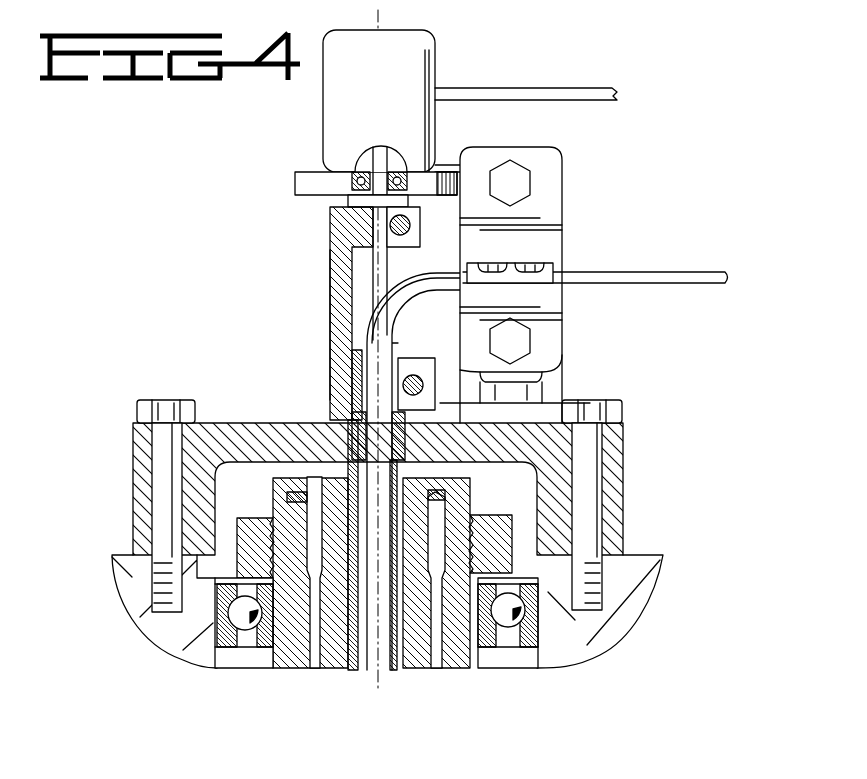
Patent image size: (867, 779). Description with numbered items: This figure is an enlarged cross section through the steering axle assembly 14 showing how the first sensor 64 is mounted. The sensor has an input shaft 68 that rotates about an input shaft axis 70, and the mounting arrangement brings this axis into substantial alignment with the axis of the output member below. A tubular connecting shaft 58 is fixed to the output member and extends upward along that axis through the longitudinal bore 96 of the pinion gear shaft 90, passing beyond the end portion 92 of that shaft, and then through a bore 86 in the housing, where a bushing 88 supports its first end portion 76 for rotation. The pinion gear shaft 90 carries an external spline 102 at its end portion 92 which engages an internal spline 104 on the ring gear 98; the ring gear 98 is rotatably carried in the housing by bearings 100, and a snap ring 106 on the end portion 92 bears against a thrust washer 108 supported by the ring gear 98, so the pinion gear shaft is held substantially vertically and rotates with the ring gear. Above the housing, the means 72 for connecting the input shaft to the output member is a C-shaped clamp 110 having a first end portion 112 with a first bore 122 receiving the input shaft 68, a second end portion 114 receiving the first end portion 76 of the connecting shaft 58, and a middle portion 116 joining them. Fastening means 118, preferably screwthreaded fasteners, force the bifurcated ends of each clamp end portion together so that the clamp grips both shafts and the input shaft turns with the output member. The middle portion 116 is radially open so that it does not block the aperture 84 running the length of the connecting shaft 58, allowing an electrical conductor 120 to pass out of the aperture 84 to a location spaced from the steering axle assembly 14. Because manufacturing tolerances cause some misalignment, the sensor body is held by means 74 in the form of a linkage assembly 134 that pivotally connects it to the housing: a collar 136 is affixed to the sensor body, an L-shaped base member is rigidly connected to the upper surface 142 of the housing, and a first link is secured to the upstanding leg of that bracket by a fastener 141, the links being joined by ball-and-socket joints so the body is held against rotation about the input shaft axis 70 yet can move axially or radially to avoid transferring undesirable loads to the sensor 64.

The steering axle assembly 14 is at (628, 212).
The connecting shaft 58 is at (355, 605).
The first sensor 64 is at (370, 84).
The input shaft 68 is at (378, 161).
The input shaft axis 70 is at (385, 62).
The means for connecting the input shaft to the output member 72 is at (320, 303).
The means for connecting the sensor body to the housing 74 is at (278, 140).
The first end portion of the connecting shaft 76 is at (352, 363).
The aperture 84 is at (453, 510).
The housing bore 86 is at (352, 418).
The bushing 88 is at (403, 443).
The pinion gear shaft 90 is at (423, 640).
The end portion of the pinion gear shaft 92 is at (440, 493).
The longitudinal bore 96 is at (370, 640).
The ring gear 98 is at (272, 625).
The bearings 100 is at (525, 635).
The external spline 102 is at (433, 533).
The internal spline 104 is at (418, 565).
The snap ring 106 is at (300, 490).
The thrust washer 108 is at (287, 500).
The clamp 110 is at (332, 325).
The clamp first end portion 112 is at (345, 228).
The clamp second end portion 114 is at (338, 385).
The clamp middle portion 116 is at (332, 282).
The fastening means 118 is at (416, 222).
The electrical conductor 120 is at (648, 272).
The first bore 122 is at (373, 216).
The linkage assembly 134 is at (452, 146).
The collar 136 is at (296, 180).
The fastener 141 is at (525, 183).
The upper surface of the housing 142 is at (232, 423).